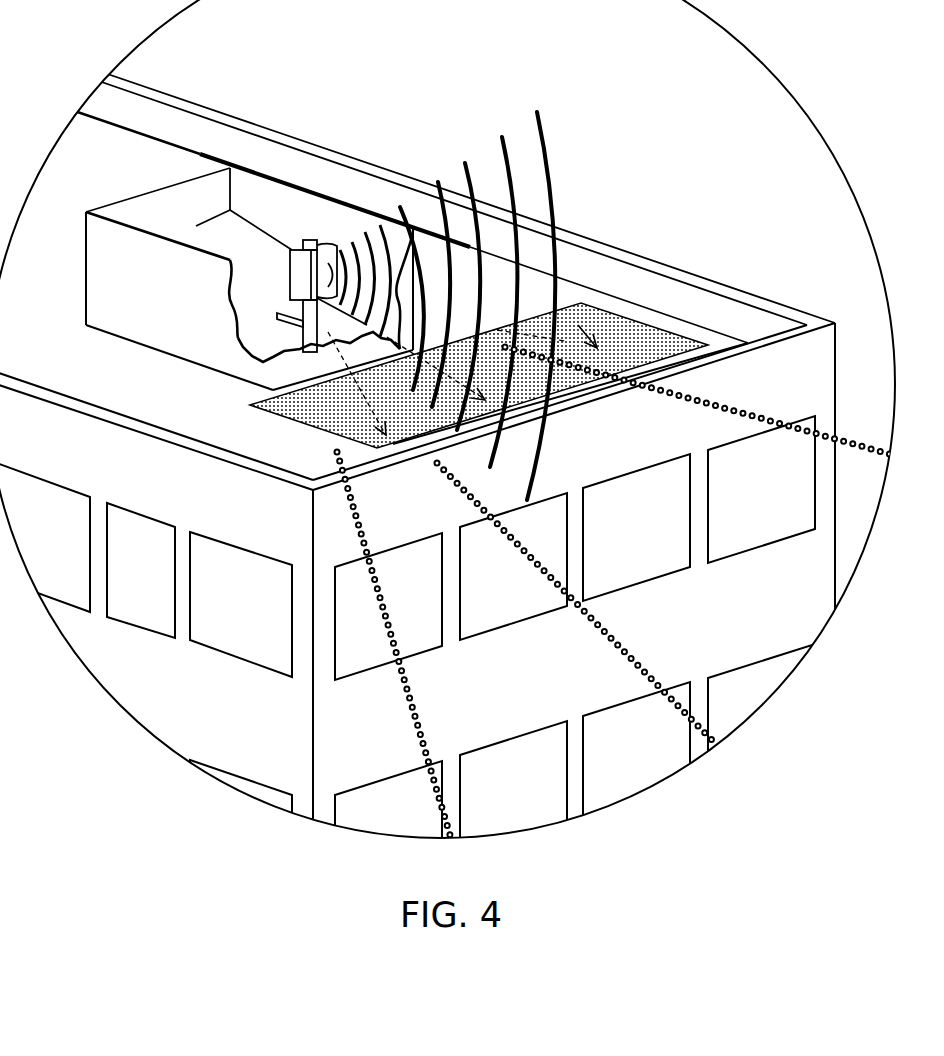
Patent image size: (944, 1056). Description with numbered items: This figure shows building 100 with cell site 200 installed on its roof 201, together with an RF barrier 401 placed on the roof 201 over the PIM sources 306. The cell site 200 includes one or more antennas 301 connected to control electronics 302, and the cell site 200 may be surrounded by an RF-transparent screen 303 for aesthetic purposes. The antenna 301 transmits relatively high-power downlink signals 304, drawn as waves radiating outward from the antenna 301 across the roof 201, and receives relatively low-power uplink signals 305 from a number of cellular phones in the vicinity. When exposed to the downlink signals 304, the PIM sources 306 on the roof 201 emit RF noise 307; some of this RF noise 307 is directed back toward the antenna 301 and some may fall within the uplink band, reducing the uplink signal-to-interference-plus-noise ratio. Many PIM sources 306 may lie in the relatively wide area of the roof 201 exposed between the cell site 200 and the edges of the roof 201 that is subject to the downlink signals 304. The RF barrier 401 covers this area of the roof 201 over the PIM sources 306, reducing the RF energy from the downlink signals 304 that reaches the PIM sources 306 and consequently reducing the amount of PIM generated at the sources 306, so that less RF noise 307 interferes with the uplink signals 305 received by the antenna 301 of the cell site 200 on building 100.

The building 100 is at (462, 167).
The cell site 200 is at (404, 219).
The roof 201 is at (448, 186).
The antenna 301 is at (275, 314).
The control electronics 302 is at (176, 209).
The RF-transparent screen 303 is at (226, 301).
The downlink signals 304 is at (477, 289).
The uplink signals 305 is at (609, 591).
The PIM sources 306 is at (564, 360).
The RF noise 307 is at (463, 314).
The RF barrier 401 is at (525, 342).